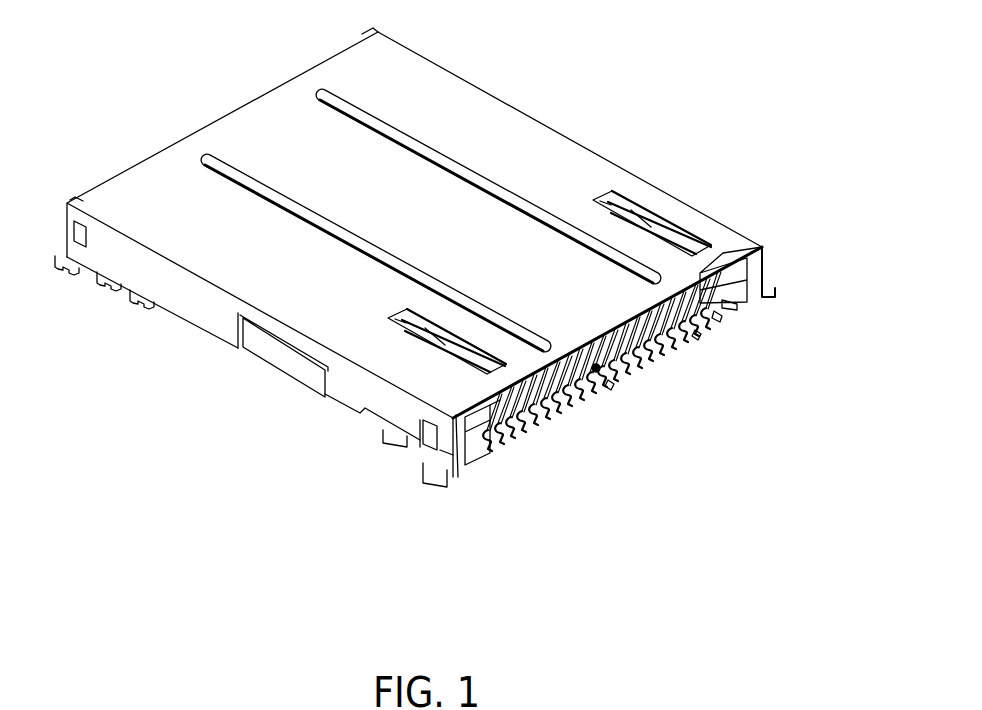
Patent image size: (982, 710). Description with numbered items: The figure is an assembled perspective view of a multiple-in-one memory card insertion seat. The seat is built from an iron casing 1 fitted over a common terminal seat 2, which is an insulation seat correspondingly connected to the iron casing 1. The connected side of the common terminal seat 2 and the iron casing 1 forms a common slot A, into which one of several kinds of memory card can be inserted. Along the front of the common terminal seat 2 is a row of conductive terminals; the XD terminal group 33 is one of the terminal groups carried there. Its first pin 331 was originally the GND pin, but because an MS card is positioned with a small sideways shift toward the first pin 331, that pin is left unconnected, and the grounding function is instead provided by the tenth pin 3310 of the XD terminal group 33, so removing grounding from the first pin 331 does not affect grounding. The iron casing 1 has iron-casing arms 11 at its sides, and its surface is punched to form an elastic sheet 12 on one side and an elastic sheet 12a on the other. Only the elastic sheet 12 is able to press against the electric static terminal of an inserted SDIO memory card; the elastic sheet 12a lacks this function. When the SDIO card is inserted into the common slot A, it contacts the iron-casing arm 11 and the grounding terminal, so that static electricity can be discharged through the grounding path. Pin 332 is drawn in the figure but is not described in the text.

The iron casing 1 is at (480, 103).
The iron-casing arm 11 is at (282, 358).
The punched elastic sheet 12 is at (633, 226).
The punched elastic sheet 12a is at (462, 358).
The common terminal seat 2 is at (468, 450).
The XD terminal group 33 is at (663, 360).
The first pin 331 is at (720, 315).
The bent portion 332 is at (700, 333).
The tenth pin 3310 is at (613, 383).
The common slot A is at (598, 365).